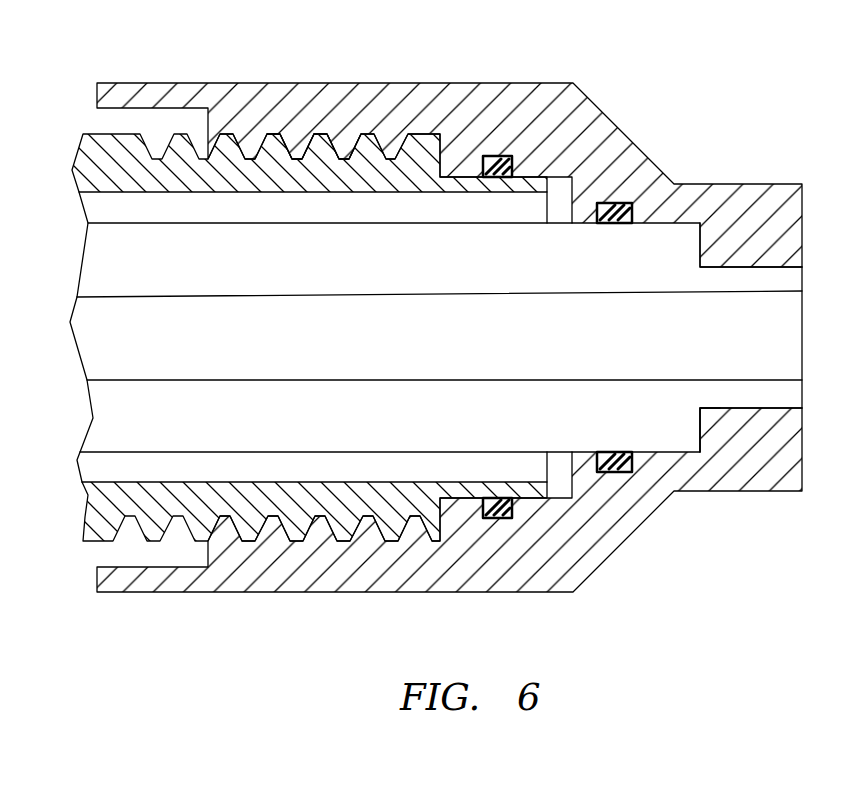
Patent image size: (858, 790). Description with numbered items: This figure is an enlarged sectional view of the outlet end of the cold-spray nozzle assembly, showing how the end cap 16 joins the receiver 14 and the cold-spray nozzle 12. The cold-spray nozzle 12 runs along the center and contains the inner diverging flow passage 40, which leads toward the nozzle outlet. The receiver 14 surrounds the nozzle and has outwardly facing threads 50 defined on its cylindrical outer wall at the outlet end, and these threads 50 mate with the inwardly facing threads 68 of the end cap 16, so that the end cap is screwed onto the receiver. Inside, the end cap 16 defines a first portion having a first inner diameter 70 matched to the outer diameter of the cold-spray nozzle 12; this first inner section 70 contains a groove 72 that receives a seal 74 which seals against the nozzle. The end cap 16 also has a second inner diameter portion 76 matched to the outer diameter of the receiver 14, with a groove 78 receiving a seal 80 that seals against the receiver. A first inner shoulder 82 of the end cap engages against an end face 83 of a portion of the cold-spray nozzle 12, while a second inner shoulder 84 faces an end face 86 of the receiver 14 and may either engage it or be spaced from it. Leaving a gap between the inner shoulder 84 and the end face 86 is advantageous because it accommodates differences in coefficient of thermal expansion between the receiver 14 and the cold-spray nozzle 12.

The cold-spray nozzle 12 is at (179, 284).
The receiver 14 is at (118, 146).
The end cap 16 is at (572, 103).
The diverging flow passage 40 is at (338, 352).
The outwardly facing threads 50 is at (296, 152).
The inwardly facing threads 68 is at (346, 134).
The first inner diameter 70 is at (693, 223).
The groove 72 is at (582, 212).
The seal 74 is at (575, 483).
The second inner diameter portion 76 is at (528, 185).
The groove 78 is at (508, 153).
The seal 80 is at (507, 520).
The first inner shoulder 82 is at (700, 430).
The end face 83 is at (700, 410).
The second inner shoulder 84 is at (608, 473).
The end face 86 is at (548, 472).